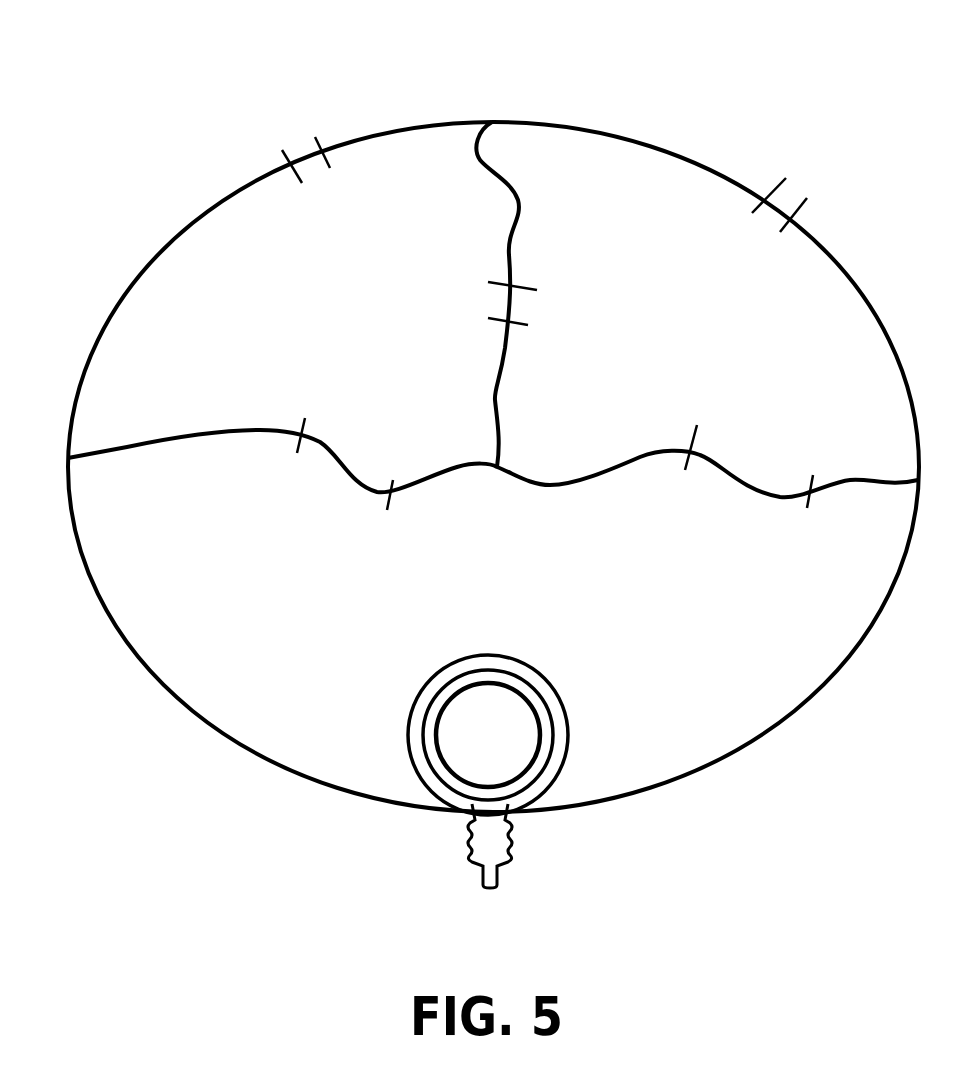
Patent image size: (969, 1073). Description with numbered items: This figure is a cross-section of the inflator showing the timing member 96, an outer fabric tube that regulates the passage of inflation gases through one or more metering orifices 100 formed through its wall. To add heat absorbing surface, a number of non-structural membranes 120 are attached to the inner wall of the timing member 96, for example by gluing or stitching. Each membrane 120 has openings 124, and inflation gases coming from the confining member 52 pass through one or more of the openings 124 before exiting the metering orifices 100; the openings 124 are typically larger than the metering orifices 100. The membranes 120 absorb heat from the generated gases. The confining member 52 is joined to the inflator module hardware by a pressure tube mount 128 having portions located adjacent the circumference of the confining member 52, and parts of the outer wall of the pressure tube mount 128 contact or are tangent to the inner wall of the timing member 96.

The timing member 96 is at (446, 122).
The metering orifices 100 is at (308, 153).
The membranes 120 is at (240, 430).
The openings 124 is at (512, 305).
The confining member 52 is at (540, 690).
The pressure tube mount 128 is at (570, 727).